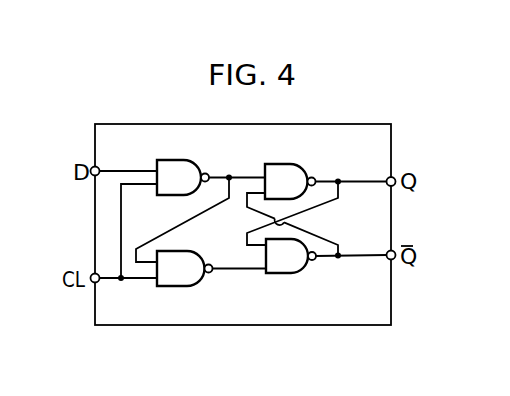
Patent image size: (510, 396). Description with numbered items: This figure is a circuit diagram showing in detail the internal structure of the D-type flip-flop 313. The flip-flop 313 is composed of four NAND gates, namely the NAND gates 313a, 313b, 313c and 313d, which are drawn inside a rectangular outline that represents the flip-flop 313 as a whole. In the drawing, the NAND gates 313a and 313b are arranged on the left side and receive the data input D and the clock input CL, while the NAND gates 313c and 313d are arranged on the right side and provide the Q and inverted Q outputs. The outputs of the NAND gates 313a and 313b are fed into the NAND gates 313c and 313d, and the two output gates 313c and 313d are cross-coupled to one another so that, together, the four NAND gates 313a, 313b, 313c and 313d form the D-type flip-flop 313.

The D-type flip-flop 313 is at (265, 325).
The NAND gate 313a is at (175, 160).
The NAND gate 313b is at (175, 287).
The NAND gate 313c is at (286, 164).
The NAND gate 313d is at (282, 274).